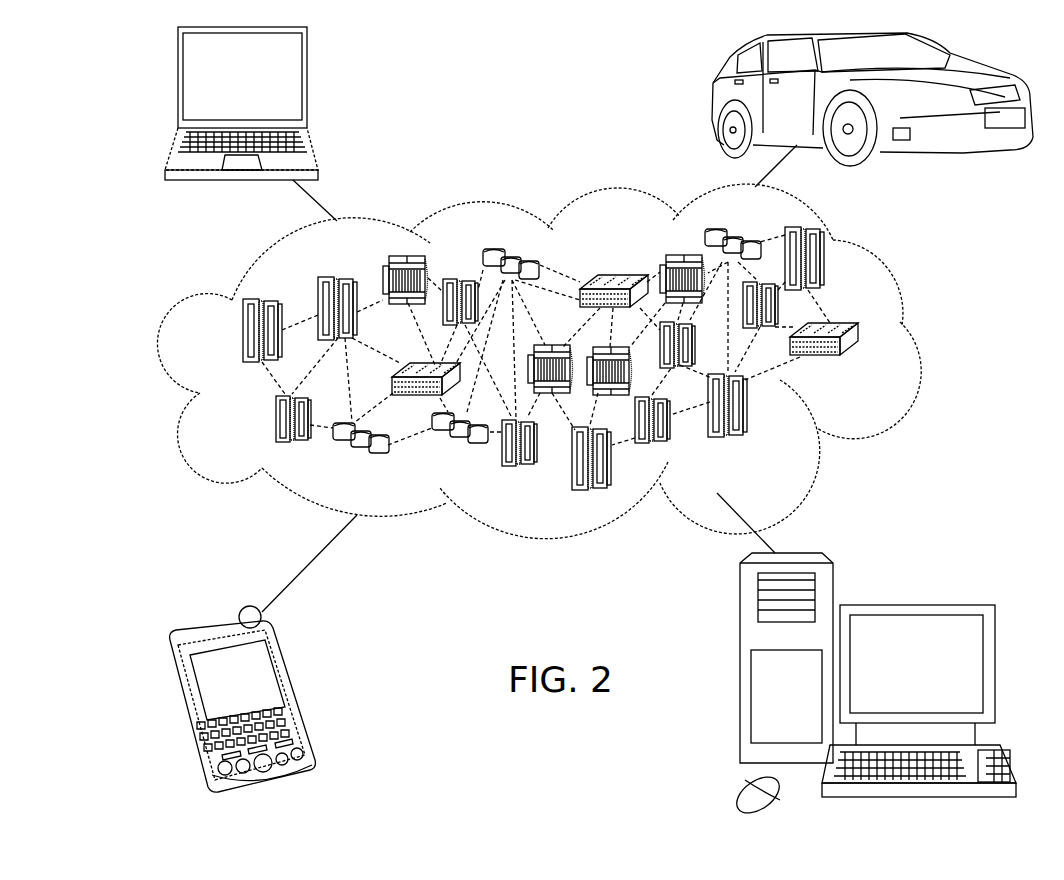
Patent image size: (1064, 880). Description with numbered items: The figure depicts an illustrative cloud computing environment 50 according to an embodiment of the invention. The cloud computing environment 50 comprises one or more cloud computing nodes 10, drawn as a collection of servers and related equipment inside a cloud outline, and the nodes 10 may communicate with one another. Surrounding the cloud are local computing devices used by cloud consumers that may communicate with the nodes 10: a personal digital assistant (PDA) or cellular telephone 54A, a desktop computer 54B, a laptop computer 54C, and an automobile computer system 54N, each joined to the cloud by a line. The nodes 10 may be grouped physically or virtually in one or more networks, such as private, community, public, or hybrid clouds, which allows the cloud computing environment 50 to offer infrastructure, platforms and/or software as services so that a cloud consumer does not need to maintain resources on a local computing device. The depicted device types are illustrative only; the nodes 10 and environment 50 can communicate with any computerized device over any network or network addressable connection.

The cloud computing node 10 is at (858, 366).
The cloud computing environment 50 is at (921, 338).
The personal digital assistant (PDA) or cellular telephone 54A is at (300, 691).
The desktop computer 54B is at (913, 603).
The laptop computer 54C is at (307, 85).
The automobile computer system 54N is at (708, 102).